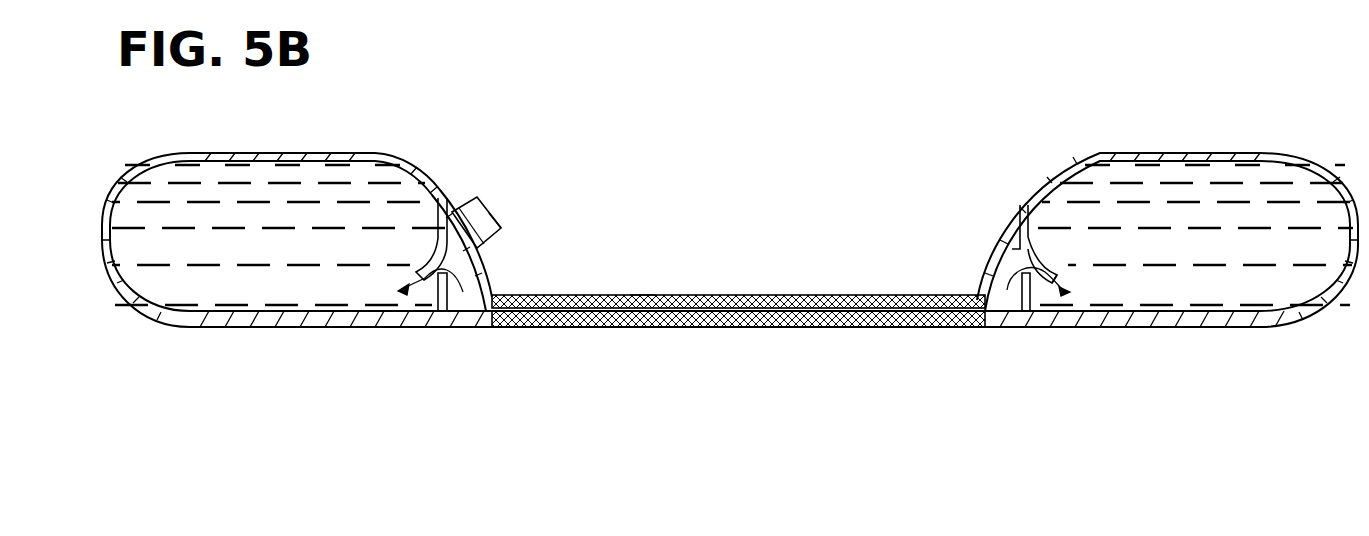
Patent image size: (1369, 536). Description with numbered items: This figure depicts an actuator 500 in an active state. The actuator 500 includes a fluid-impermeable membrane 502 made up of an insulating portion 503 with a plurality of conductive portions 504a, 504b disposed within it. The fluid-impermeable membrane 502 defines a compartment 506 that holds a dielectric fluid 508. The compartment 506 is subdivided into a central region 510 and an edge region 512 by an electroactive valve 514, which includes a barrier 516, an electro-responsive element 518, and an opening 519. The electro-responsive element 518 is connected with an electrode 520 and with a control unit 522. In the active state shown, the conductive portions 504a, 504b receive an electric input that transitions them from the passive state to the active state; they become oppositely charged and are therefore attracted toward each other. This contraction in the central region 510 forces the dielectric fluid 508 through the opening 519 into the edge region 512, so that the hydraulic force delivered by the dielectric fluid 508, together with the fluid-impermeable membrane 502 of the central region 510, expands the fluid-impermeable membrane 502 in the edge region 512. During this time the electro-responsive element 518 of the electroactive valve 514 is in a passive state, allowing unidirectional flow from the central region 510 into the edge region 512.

The actuator 500 is at (1210, 85).
The fluid-impermeable membrane 502 is at (480, 198).
The insulating portion 503 is at (728, 295).
The conductive portion 504a is at (642, 288).
The conductive portion 504b is at (642, 334).
The compartment 506 is at (1012, 238).
The dielectric fluid 508 is at (864, 295).
The central region 510 is at (1002, 300).
The edge region 512 is at (285, 190).
The electroactive valve 514 is at (1023, 205).
The barrier 516 is at (1032, 217).
The electro-responsive element 518 is at (1040, 262).
The opening 519 is at (1032, 292).
The electrode 520 is at (450, 205).
The control unit 522 is at (500, 213).